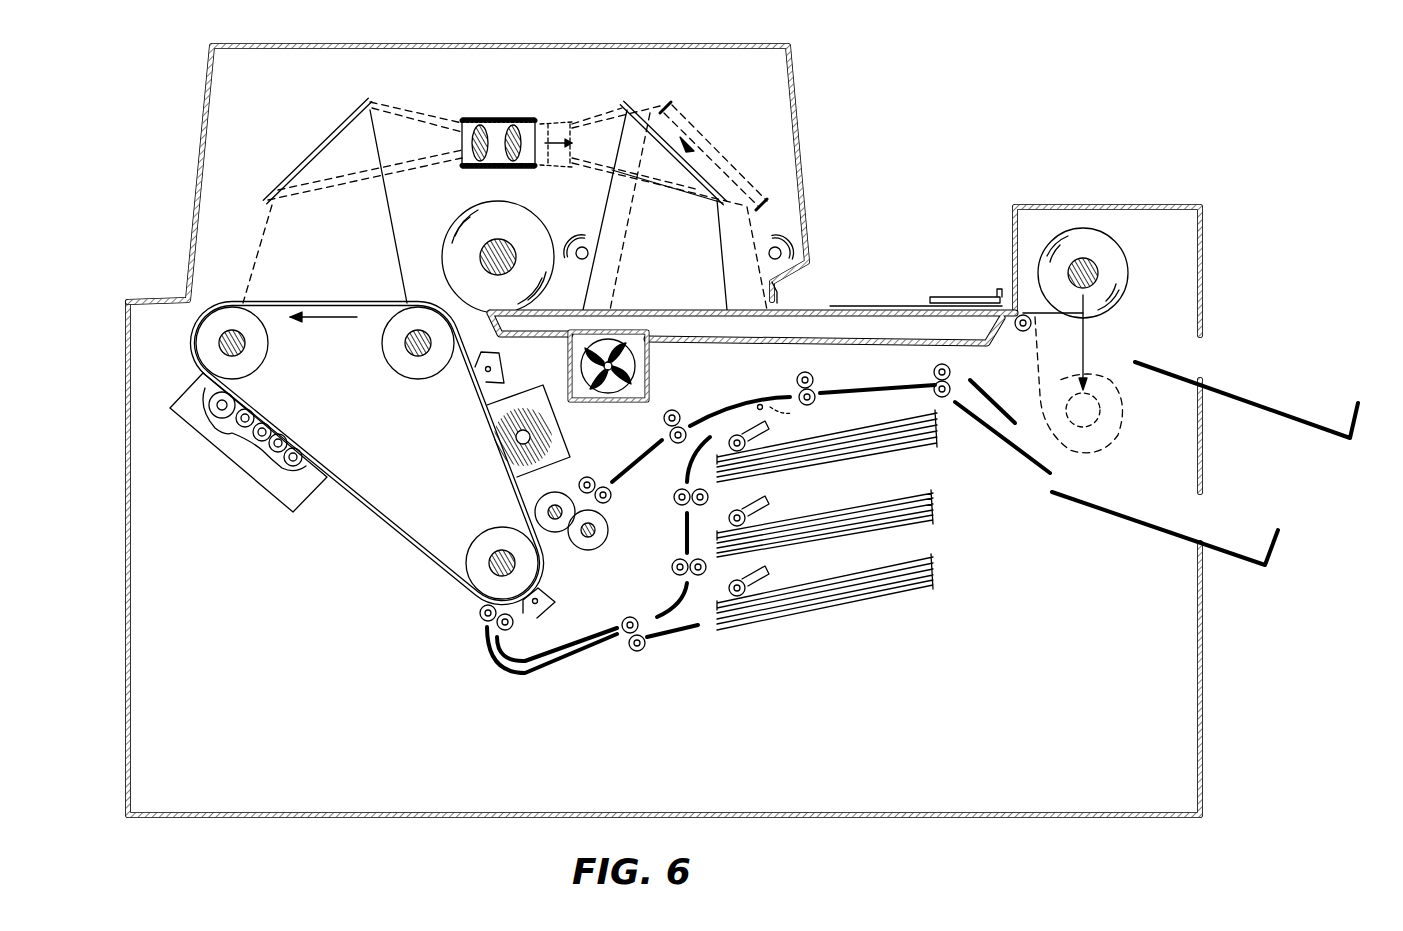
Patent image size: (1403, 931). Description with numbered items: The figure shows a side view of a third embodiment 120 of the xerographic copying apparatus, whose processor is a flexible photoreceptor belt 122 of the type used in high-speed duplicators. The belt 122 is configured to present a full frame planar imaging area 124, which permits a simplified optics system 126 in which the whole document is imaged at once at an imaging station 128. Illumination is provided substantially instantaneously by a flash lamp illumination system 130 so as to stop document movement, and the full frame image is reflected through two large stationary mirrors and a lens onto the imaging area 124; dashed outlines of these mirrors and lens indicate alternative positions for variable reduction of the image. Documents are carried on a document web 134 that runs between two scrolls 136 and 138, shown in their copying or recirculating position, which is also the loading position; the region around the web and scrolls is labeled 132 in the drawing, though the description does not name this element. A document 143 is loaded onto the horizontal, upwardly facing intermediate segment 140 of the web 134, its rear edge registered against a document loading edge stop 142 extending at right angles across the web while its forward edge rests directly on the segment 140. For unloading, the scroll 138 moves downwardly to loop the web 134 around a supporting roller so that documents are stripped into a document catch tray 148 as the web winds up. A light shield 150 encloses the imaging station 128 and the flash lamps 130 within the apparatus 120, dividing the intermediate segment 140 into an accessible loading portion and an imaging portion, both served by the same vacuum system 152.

The third embodiment 120 is at (932, 136).
The flexible photoreceptor belt 122 is at (381, 517).
The full frame planar imaging area 124 is at (310, 302).
The simplified optics system 126 is at (507, 88).
The imaging station 128 is at (663, 300).
The flash lamp illumination system 130 is at (583, 247).
The fuser station 132 is at (900, 250).
The document web 134 is at (782, 312).
The scroll 136 is at (470, 208).
The scroll 138 is at (1128, 266).
The intermediate segment 140 is at (780, 304).
The document loading edge stop 142 is at (993, 292).
The document 143 is at (852, 306).
The document catch tray 148 is at (1180, 372).
The light shield 150 is at (795, 90).
The vacuum system 152 is at (655, 325).